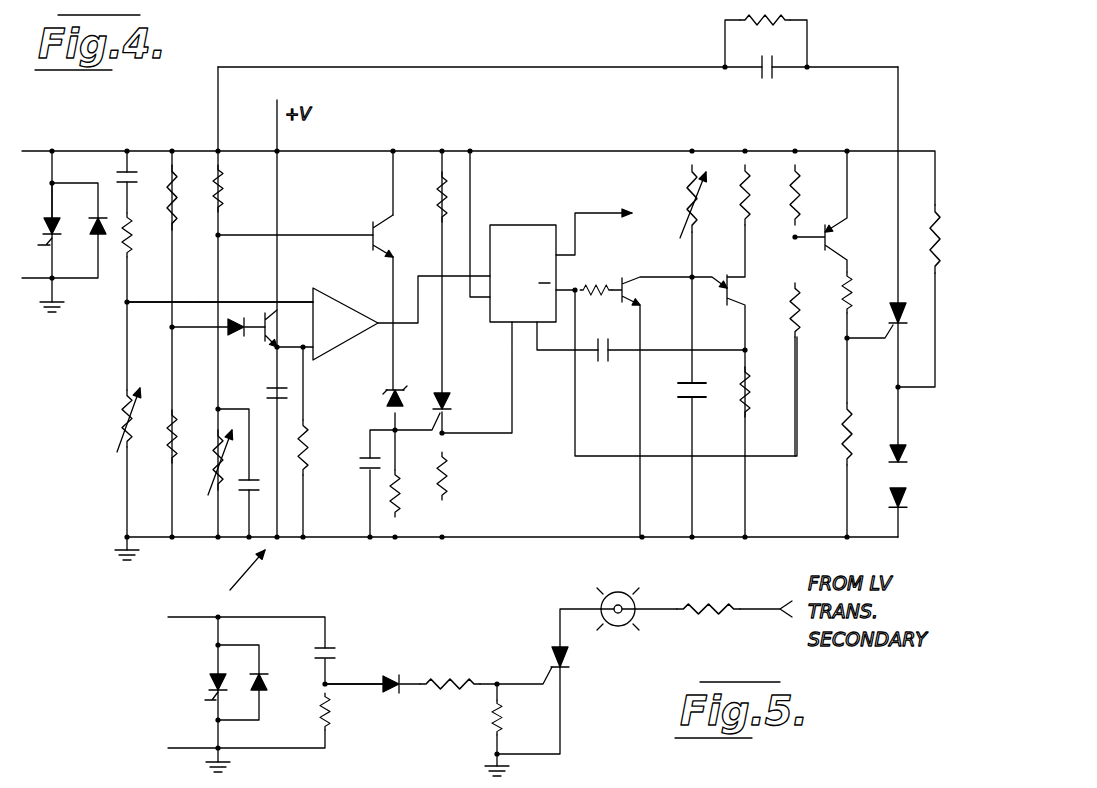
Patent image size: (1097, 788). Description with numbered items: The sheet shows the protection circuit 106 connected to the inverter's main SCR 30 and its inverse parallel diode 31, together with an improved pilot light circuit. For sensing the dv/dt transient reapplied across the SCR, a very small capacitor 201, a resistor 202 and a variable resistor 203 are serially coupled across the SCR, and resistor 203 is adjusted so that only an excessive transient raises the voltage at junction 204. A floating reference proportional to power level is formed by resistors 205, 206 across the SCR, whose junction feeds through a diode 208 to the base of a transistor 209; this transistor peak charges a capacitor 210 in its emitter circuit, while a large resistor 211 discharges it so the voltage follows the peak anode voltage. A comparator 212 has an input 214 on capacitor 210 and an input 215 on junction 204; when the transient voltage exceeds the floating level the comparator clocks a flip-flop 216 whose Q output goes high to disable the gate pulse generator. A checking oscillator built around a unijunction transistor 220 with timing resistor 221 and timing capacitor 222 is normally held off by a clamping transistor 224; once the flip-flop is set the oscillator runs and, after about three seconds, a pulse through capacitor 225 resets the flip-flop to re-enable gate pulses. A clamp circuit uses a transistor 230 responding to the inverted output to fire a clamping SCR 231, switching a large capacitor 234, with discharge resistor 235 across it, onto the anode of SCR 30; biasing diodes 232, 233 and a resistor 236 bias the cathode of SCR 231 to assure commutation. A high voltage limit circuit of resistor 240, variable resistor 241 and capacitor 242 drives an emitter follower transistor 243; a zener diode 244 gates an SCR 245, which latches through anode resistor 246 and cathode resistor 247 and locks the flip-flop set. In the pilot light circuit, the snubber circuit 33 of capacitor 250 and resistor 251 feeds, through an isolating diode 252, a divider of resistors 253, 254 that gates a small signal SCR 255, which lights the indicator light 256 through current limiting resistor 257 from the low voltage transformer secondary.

In FIG. 4, the capacitor 201 is at (138, 165).
In FIG. 4, the resistor 205 is at (176, 172).
In FIG. 4, the resistor 240 is at (224, 196).
In FIG. 4, the SCR 30 is at (46, 215).
In FIG. 5, the SCR 30 is at (200, 682).
In FIG. 4, the inverse parallel diode 31 is at (95, 242).
In FIG. 5, the inverse parallel diode 31 is at (268, 684).
In FIG. 4, the resistor 202 is at (122, 262).
In FIG. 4, the junction 204 is at (124, 305).
In FIG. 4, the variable resistor 203 is at (118, 426).
In FIG. 4, the resistor 206 is at (167, 462).
In FIG. 4, the variable resistor 241 is at (220, 440).
In FIG. 4, the capacitor 242 is at (230, 495).
In FIG. 4, the diode 208 is at (228, 335).
In FIG. 4, the transistor 209 is at (258, 310).
In FIG. 4, the comparator input 214 is at (284, 355).
In FIG. 4, the capacitor 210 is at (270, 393).
In FIG. 4, the comparator input 215 is at (286, 298).
In FIG. 4, the comparator 212 is at (332, 310).
In FIG. 4, the transistor 243 is at (368, 224).
In FIG. 4, the anode resistor 246 is at (452, 172).
In FIG. 4, the flip-flop 216 is at (546, 226).
In FIG. 4, the zener diode 244 is at (380, 394).
In FIG. 4, the resistor 211 is at (310, 430).
In FIG. 4, the SCR 245 is at (450, 408).
In FIG. 4, the cathode resistor 247 is at (450, 488).
In FIG. 4, the clamping transistor 224 is at (628, 306).
In FIG. 4, the capacitor 225 is at (602, 364).
In FIG. 4, the timing capacitor 222 is at (680, 398).
In FIG. 4, the timing resistor 221 is at (706, 206).
In FIG. 4, the unijunction transistor 220 is at (728, 296).
In FIG. 4, the transistor 230 is at (822, 242).
In FIG. 4, the clamping SCR 231 is at (896, 302).
In FIG. 4, the resistor 236 is at (934, 216).
In FIG. 4, the biasing diode 232 is at (910, 452).
In FIG. 4, the biasing diode 233 is at (904, 497).
In FIG. 4, the capacitor 234 is at (768, 78).
In FIG. 4, the discharge resistor 235 is at (800, 22).
In FIG. 4, the sensing circuits 106 is at (225, 571).
In FIG. 5, the capacitor 250 is at (378, 616).
In FIG. 5, the snubber circuit 33 is at (356, 672).
In FIG. 5, the resistor 251 is at (328, 730).
In FIG. 5, the isolating diode 252 is at (386, 690).
In FIG. 5, the resistor 253 is at (444, 676).
In FIG. 5, the resistor 254 is at (490, 724).
In FIG. 5, the small signal SCR 255 is at (554, 644).
In FIG. 5, the indicator light 256 is at (618, 628).
In FIG. 5, the current limiting resistor 257 is at (722, 618).